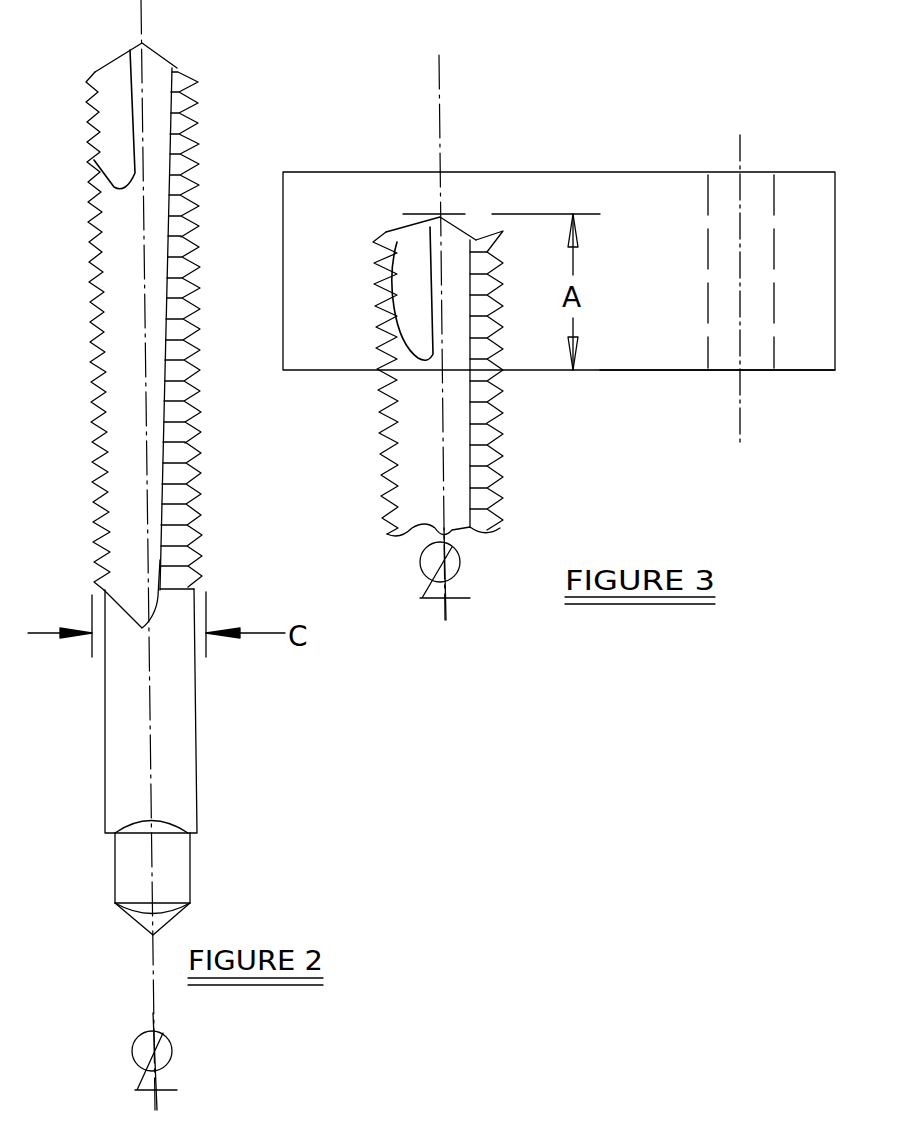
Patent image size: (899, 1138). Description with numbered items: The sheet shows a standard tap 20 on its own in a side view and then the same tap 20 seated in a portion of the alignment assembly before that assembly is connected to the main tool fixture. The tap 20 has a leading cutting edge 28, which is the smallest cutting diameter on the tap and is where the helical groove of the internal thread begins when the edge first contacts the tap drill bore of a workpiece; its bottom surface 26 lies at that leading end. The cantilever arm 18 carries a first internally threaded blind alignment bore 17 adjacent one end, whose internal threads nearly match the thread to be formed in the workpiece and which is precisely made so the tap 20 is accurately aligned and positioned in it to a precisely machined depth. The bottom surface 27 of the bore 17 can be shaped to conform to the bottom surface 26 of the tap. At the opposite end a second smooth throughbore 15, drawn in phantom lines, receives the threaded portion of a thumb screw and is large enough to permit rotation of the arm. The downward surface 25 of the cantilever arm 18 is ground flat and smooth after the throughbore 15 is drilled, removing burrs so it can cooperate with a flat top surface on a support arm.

In FIG. 3, the second smooth throughbore 15 is at (710, 208).
In FIG. 3, the first internally threaded blind alignment bore 17 is at (525, 380).
In FIG. 3, the cantilever arm 18 is at (323, 225).
In FIG. 2, the tap 20 is at (211, 555).
In FIG. 3, the tap 20 is at (434, 337).
In FIG. 3, the downward surface 25 is at (797, 372).
In FIG. 2, the bottom surface of the tap 26 is at (139, 44).
In FIG. 3, the bottom surface of the bore 27 is at (465, 215).
In FIG. 2, the leading cutting edge 28 is at (180, 70).